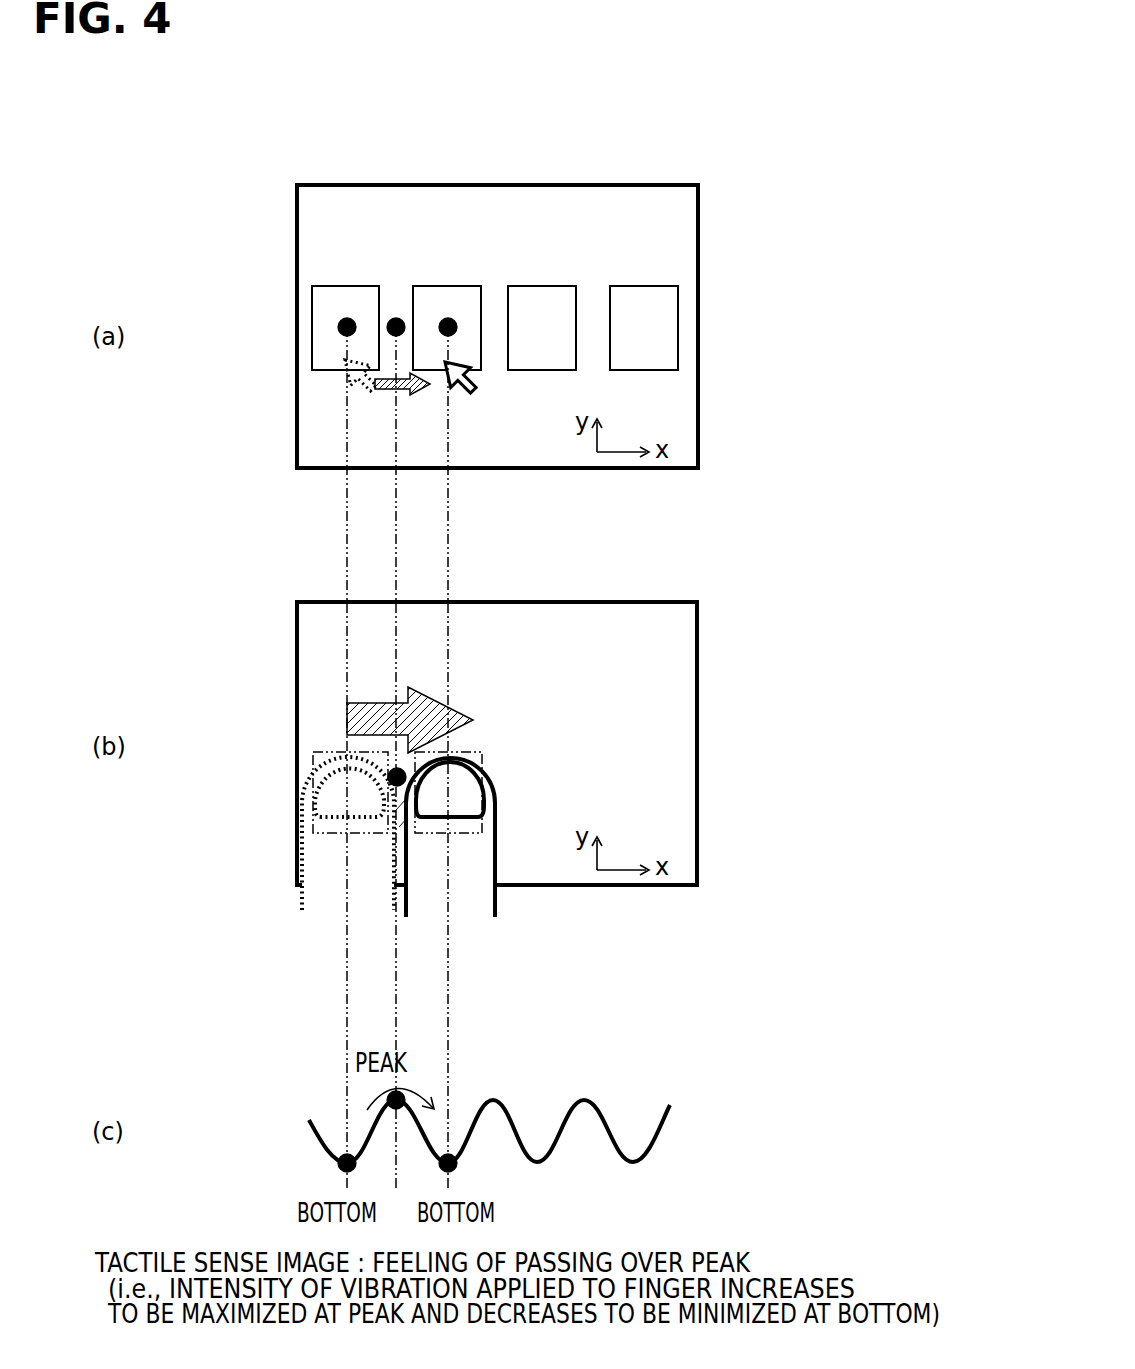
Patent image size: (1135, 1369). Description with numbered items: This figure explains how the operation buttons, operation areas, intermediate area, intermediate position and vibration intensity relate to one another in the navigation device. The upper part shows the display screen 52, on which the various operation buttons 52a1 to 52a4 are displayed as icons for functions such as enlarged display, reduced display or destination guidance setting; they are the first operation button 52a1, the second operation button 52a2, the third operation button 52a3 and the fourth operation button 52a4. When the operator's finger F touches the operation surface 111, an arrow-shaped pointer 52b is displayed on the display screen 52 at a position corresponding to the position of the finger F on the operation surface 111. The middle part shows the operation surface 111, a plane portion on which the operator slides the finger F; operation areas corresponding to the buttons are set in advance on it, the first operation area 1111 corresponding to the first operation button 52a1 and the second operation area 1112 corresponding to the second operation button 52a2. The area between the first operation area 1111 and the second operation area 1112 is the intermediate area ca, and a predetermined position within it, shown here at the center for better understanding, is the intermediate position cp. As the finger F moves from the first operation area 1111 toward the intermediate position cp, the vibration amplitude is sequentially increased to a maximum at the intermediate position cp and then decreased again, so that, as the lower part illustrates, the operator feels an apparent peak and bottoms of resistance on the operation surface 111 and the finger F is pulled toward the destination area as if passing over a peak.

The display screen 52 is at (312, 208).
The first operation button 52a1 is at (342, 286).
The second operation button 52a2 is at (446, 286).
The third operation button 52a3 is at (540, 286).
The fourth operation button 52a4 is at (642, 286).
The pointer 52b is at (474, 394).
The operation surface 111 is at (496, 632).
The first operation area 1111 is at (313, 752).
The second operation area 1112 is at (483, 765).
The intermediate area ca is at (395, 769).
The intermediate position cp is at (410, 752).
The finger F is at (297, 851).